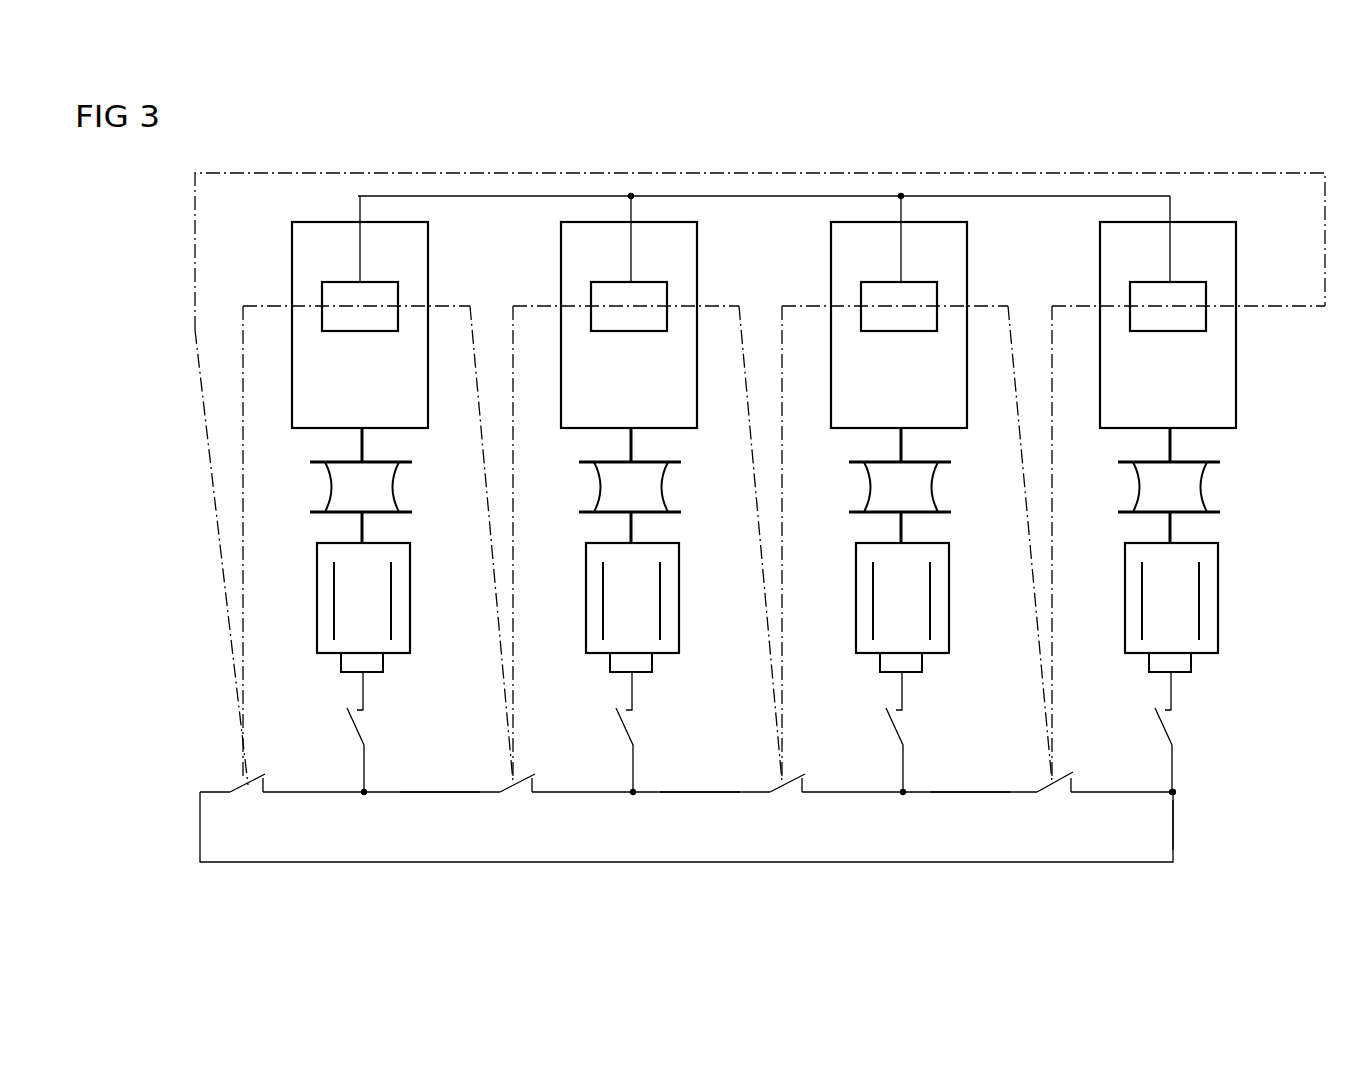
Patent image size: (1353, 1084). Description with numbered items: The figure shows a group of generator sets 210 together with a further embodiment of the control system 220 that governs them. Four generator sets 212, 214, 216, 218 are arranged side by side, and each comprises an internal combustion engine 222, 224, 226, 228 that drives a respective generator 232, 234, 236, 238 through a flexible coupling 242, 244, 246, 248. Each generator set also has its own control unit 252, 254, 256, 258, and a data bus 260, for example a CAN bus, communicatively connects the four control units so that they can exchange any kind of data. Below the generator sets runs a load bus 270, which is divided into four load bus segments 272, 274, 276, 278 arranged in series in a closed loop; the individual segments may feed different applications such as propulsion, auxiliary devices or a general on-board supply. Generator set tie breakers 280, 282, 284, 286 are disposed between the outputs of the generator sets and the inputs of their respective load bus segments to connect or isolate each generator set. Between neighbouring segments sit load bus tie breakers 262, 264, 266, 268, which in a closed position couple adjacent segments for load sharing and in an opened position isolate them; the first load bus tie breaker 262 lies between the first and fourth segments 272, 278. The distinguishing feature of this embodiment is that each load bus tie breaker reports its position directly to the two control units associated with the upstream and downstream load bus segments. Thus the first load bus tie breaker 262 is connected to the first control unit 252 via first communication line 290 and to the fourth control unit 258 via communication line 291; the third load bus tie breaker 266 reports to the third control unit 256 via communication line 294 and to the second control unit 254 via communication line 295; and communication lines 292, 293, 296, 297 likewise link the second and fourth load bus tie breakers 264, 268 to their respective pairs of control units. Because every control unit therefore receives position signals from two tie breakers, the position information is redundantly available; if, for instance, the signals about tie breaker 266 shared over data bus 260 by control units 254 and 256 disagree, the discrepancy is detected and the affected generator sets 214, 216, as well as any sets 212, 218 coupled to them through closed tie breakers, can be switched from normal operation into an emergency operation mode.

The group of generator sets 210 is at (322, 129).
The first generator set 212 is at (266, 292).
The second generator set 214 is at (537, 292).
The third generator set 216 is at (804, 292).
The fourth generator set 218 is at (1074, 292).
The control system 220 is at (197, 493).
The internal combustion engine 222 is at (429, 282).
The internal combustion engine 224 is at (698, 282).
The internal combustion engine 226 is at (968, 282).
The internal combustion engine 228 is at (1237, 276).
The generator 232 is at (394, 673).
The generator 234 is at (663, 673).
The generator 236 is at (933, 673).
The generator 238 is at (1202, 673).
The flexible coupling 242 is at (325, 490).
The flexible coupling 244 is at (594, 490).
The flexible coupling 246 is at (864, 490).
The flexible coupling 248 is at (1133, 490).
The first control unit 252 is at (361, 332).
The second control unit 254 is at (630, 332).
The third control unit 256 is at (900, 332).
The fourth control unit 258 is at (1169, 332).
The data bus 260 is at (722, 196).
The first load bus tie breaker 262 is at (250, 797).
The second load bus tie breaker 264 is at (519, 797).
The third load bus tie breaker 266 is at (789, 797).
The fourth load bus tie breaker 268 is at (1057, 797).
The load bus 270 is at (190, 843).
The first load bus segment 272 is at (450, 795).
The second load bus segment 274 is at (690, 795).
The third load bus segment 276 is at (963, 795).
The fourth load bus segment 278 is at (1175, 815).
The generator set tie breaker 280 is at (347, 730).
The generator set tie breaker 282 is at (616, 730).
The generator set tie breaker 284 is at (886, 730).
The generator set tie breaker 286 is at (1155, 730).
The first communication line 290 is at (247, 688).
The communication line 291 is at (230, 620).
The communication line 292 is at (517, 688).
The communication line 293 is at (498, 612).
The communication line 294 is at (787, 688).
The communication line 295 is at (768, 612).
The communication line 296 is at (1056, 688).
The communication line 297 is at (1038, 612).